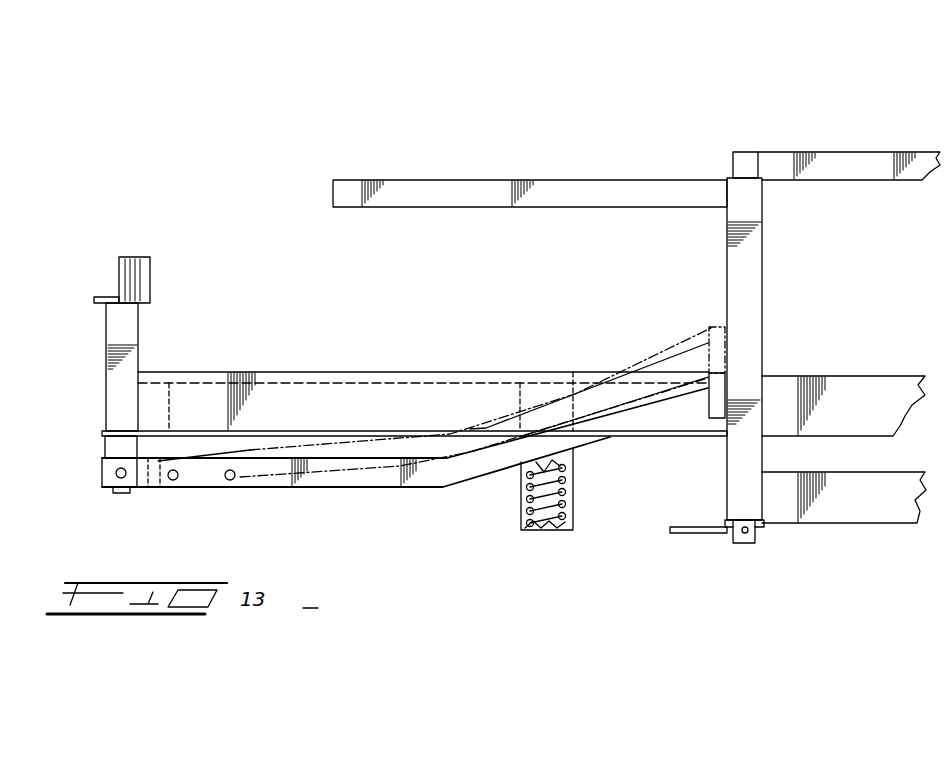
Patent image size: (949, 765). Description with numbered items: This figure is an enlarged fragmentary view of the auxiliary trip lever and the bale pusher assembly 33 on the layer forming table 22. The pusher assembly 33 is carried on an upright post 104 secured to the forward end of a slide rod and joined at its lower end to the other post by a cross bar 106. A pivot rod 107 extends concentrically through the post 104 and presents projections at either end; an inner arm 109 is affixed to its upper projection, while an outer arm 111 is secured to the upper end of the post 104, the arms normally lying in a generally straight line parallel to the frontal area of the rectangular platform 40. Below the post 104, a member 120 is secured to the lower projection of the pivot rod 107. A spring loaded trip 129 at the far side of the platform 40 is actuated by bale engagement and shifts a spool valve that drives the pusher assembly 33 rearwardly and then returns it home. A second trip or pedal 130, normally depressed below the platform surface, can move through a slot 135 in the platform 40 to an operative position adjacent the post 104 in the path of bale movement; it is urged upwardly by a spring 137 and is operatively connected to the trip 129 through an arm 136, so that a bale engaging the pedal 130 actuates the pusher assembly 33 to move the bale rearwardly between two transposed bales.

The bale pusher assembly 33 is at (686, 98).
The outer arm 111 is at (532, 190).
The pivot rod 107 is at (744, 160).
The inner arm 109 is at (862, 164).
The upright post 104 is at (752, 293).
The cross bar 106 is at (858, 503).
The member 120 is at (690, 537).
The trip 129 is at (140, 280).
The layer forming table 22 is at (324, 367).
The rectangular platform 40 is at (445, 372).
The second trip (pedal) 130 is at (718, 396).
The slot 135 is at (602, 382).
The arm 136 is at (460, 468).
The spring 137 is at (570, 493).